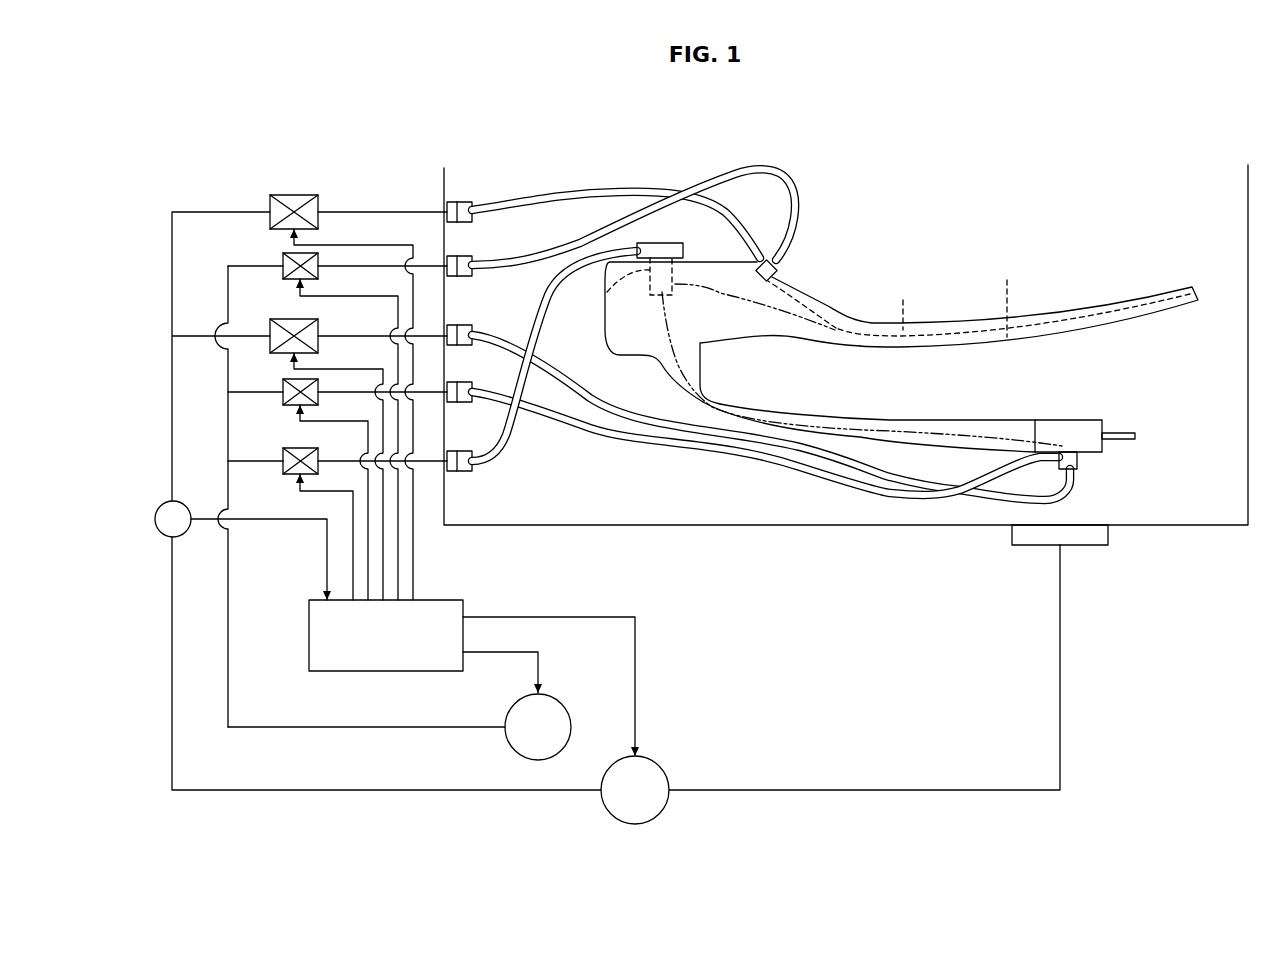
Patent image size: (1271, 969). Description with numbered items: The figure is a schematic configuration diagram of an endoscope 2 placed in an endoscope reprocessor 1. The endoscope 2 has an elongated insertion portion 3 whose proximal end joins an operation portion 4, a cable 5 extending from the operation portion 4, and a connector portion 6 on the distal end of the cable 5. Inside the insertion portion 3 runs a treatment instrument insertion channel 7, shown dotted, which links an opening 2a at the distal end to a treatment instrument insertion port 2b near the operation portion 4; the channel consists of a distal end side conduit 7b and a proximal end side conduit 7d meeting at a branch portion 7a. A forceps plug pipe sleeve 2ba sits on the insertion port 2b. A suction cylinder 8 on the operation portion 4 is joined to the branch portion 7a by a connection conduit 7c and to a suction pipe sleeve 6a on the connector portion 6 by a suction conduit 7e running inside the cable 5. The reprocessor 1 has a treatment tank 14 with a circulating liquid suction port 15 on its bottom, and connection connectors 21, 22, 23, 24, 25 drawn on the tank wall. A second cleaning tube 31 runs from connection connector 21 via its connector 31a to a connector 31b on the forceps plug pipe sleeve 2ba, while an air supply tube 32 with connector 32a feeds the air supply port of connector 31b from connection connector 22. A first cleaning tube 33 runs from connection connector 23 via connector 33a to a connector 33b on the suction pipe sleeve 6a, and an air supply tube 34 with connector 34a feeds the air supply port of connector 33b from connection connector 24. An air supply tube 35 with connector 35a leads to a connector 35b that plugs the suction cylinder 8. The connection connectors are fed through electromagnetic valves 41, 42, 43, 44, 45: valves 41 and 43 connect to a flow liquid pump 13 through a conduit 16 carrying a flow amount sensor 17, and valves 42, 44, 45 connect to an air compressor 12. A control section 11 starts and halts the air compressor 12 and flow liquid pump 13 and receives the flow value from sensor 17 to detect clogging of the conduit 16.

The endoscope reprocessor 1 is at (196, 164).
The endoscope 2 is at (899, 347).
The opening 2a is at (1199, 286).
The treatment instrument insertion port 2b is at (790, 256).
The forceps plug pipe sleeve 2ba is at (805, 267).
The insertion portion 3 is at (1082, 318).
The operation portion 4 is at (755, 343).
The cable 5 is at (835, 415).
The connector portion 6 is at (1085, 420).
The suction pipe sleeve 6a is at (1078, 476).
The treatment instrument insertion channel 7 is at (910, 330).
The branch portion 7a is at (903, 300).
The distal end side conduit 7b is at (1007, 290).
The connection conduit 7c is at (740, 302).
The proximal end side conduit 7d is at (805, 291).
The suction conduit 7e is at (672, 372).
The suction cylinder 8 is at (620, 290).
The control section 11 is at (452, 600).
The air compressor 12 is at (560, 697).
The flow liquid pump 13 is at (660, 760).
The treatment tank 14 is at (1247, 190).
The circulating liquid suction port 15 is at (1110, 546).
The conduit 16 is at (172, 447).
The flow amount sensor 17 is at (165, 537).
The connection connector 21 is at (455, 202).
The connection connector 22 is at (452, 256).
The connection connector 23 is at (449, 325).
The connection connector 24 is at (452, 382).
The connection connector 25 is at (456, 472).
The second cleaning tube 31 is at (592, 190).
The connector 31a is at (478, 205).
The connector 31b is at (766, 256).
The air supply tube 32 is at (692, 179).
The connector 32a is at (478, 264).
The first cleaning tube 33 is at (560, 385).
The connector 33a is at (477, 336).
The connector 33b is at (1078, 462).
The air supply tube 34 is at (640, 448).
The connector 34a is at (462, 403).
The air supply tube 35 is at (528, 428).
The connector 35a is at (475, 467).
The connector 35b is at (655, 244).
The electromagnetic valve 41 is at (284, 195).
The electromagnetic valve 42 is at (292, 253).
The electromagnetic valve 43 is at (286, 319).
The electromagnetic valve 44 is at (292, 379).
The electromagnetic valve 45 is at (296, 448).